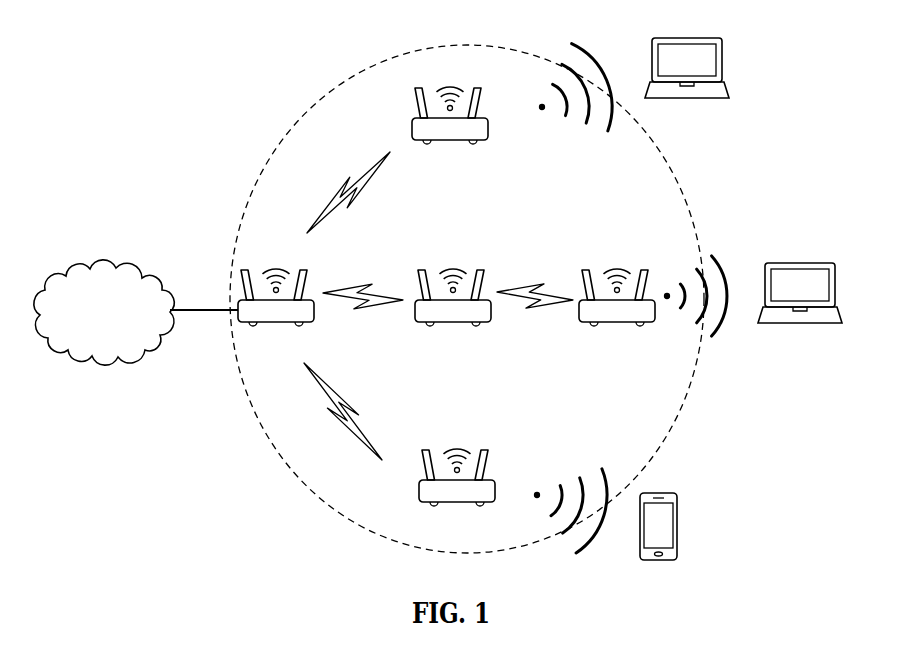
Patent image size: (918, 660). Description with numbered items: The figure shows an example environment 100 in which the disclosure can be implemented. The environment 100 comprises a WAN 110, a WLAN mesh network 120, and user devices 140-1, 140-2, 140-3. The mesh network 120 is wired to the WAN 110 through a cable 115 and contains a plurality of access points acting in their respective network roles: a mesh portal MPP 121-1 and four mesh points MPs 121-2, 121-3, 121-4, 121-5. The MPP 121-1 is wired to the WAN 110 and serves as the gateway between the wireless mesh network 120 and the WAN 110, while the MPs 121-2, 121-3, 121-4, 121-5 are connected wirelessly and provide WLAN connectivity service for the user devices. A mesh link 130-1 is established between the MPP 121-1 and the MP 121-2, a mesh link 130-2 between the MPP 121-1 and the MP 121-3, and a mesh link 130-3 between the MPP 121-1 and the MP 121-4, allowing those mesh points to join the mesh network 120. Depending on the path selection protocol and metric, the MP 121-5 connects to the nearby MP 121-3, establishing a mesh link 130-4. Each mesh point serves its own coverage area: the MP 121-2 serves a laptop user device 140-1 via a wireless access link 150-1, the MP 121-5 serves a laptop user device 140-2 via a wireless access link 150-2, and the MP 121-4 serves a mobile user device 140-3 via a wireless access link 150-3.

The environment 100 is at (116, 58).
The WAN 110 is at (144, 272).
The cable 115 is at (186, 310).
The WLAN mesh network 120 is at (346, 84).
The MPP 121-1 is at (306, 271).
The MP 121-2 is at (481, 89).
The MP 121-3 is at (484, 271).
The MP 121-4 is at (488, 451).
The MP 121-5 is at (648, 271).
The mesh link 130-1 is at (376, 178).
The mesh link 130-2 is at (361, 285).
The mesh link 130-3 is at (349, 403).
The mesh link 130-4 is at (534, 285).
The user device 140-1 is at (713, 40).
The user device 140-2 is at (811, 264).
The user device 140-3 is at (669, 494).
The wireless access link 150-1 is at (575, 50).
The wireless access link 150-2 is at (716, 261).
The wireless access link 150-3 is at (603, 467).